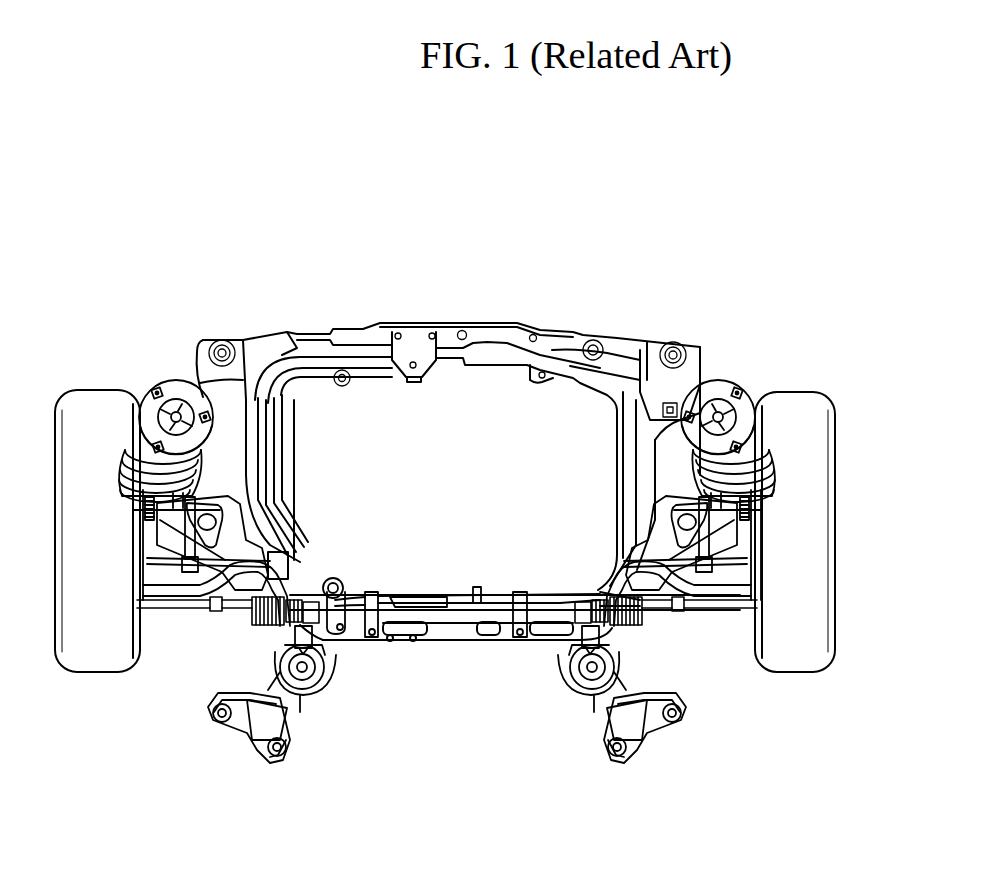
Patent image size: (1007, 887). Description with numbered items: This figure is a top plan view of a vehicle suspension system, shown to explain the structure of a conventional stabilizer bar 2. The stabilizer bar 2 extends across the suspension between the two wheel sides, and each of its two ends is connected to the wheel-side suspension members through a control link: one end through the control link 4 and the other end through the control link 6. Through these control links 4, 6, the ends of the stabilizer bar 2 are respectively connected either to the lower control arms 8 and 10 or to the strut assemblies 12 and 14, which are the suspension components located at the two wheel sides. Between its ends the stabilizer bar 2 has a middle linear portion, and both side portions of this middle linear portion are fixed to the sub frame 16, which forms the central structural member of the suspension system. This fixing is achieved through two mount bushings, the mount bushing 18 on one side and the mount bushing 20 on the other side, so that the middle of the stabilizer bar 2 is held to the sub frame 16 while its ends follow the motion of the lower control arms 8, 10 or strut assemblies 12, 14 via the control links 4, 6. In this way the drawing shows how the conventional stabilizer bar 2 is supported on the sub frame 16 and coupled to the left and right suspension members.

The stabilizer bar 2 is at (410, 652).
The control link 4 is at (196, 522).
The control link 6 is at (723, 545).
The lower control arm 8 is at (232, 487).
The lower control arm 10 is at (657, 467).
The strut assembly 12 is at (153, 381).
The strut assembly 14 is at (721, 381).
The sub frame 16 is at (448, 630).
The mount bushing 18 is at (285, 645).
The mount bushing 20 is at (599, 647).